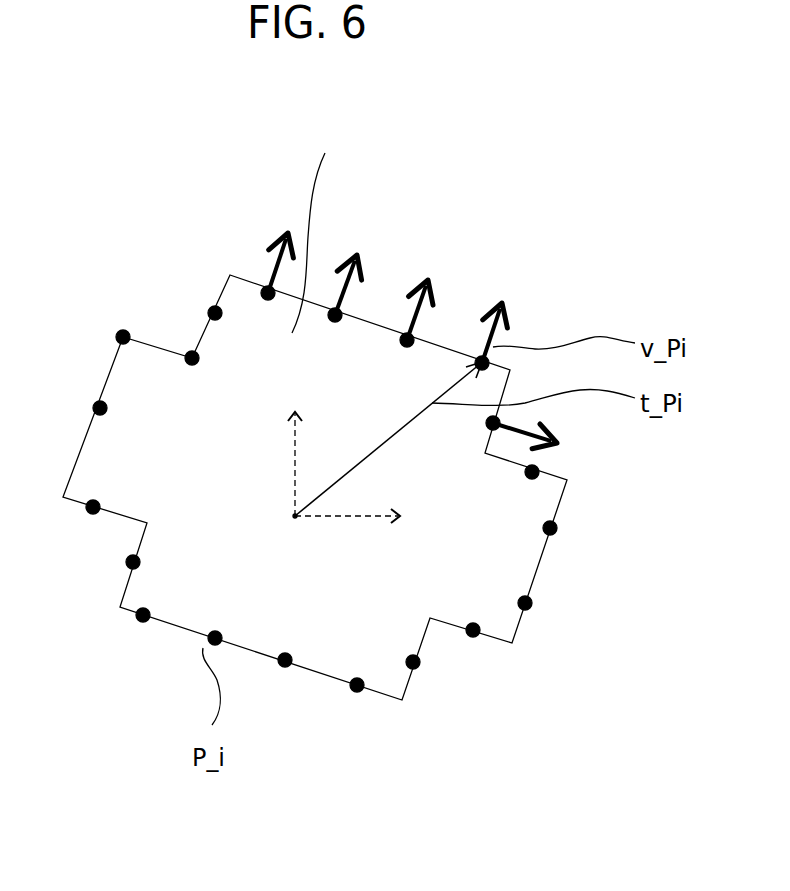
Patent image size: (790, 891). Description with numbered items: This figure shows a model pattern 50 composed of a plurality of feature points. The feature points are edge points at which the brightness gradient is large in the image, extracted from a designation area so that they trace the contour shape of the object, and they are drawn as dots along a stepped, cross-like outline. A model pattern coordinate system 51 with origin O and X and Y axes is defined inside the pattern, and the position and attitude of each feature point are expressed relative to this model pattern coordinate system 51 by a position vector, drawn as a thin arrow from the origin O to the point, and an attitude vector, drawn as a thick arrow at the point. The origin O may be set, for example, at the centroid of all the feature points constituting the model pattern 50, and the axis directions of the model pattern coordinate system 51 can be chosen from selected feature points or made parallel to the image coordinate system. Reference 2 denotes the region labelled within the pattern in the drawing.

The model pattern 50 is at (142, 267).
The object / workpiece region 2 is at (287, 230).
The model pattern coordinate system 51 is at (280, 505).